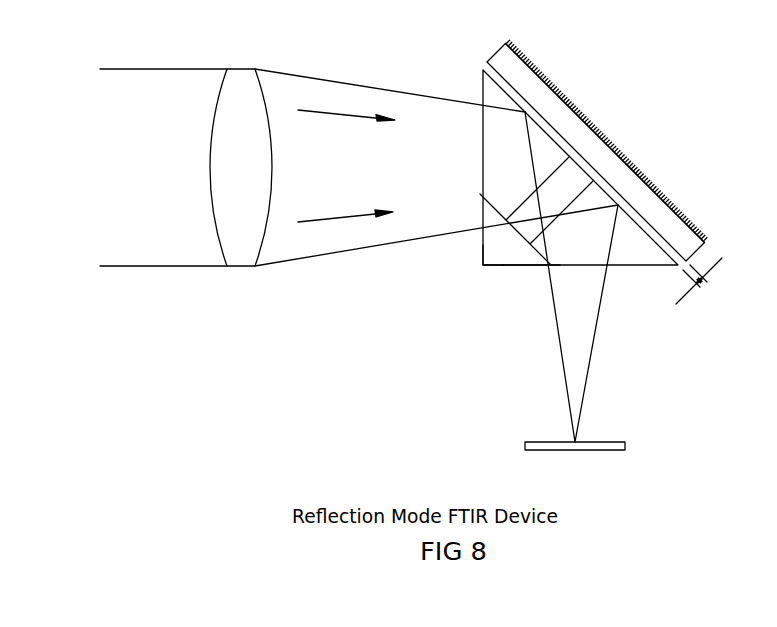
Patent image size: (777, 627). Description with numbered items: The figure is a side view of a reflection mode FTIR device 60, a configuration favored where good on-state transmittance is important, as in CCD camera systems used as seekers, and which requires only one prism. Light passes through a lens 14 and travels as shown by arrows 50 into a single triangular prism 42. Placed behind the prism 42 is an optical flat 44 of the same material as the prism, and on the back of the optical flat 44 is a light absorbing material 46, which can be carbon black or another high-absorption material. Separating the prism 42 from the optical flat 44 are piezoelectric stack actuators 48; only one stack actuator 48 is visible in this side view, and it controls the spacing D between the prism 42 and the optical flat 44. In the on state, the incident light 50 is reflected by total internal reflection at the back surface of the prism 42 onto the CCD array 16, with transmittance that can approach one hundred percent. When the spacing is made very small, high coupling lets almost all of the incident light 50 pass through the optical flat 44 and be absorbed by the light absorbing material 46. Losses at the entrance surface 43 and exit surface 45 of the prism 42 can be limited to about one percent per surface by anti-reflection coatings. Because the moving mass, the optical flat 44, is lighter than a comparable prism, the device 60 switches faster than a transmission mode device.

The lens 14 is at (237, 67).
The CCD array 16 is at (597, 440).
The prism 42 is at (492, 252).
The entrance surface 43 is at (482, 88).
The optical flat 44 is at (496, 56).
The exit surface 45 is at (530, 267).
The light absorbing material 46 is at (623, 163).
The piezoelectric stack actuator 48 is at (516, 209).
The light (arrows) 50 is at (348, 121).
The reflection mode FTIR device 60 is at (638, 70).